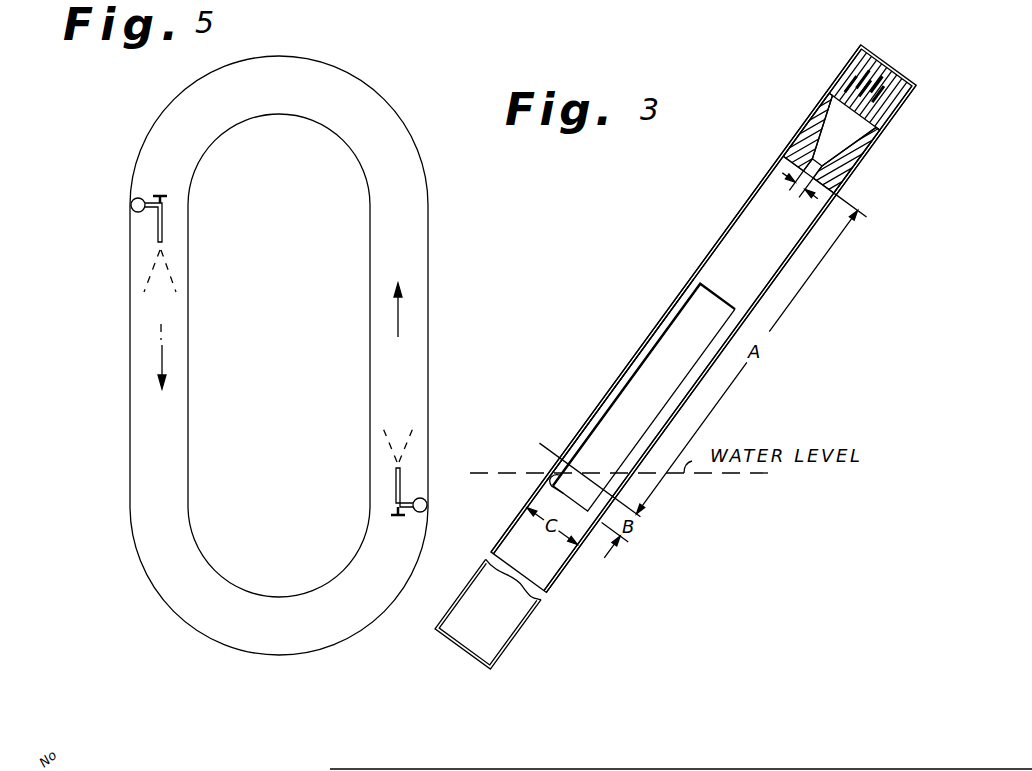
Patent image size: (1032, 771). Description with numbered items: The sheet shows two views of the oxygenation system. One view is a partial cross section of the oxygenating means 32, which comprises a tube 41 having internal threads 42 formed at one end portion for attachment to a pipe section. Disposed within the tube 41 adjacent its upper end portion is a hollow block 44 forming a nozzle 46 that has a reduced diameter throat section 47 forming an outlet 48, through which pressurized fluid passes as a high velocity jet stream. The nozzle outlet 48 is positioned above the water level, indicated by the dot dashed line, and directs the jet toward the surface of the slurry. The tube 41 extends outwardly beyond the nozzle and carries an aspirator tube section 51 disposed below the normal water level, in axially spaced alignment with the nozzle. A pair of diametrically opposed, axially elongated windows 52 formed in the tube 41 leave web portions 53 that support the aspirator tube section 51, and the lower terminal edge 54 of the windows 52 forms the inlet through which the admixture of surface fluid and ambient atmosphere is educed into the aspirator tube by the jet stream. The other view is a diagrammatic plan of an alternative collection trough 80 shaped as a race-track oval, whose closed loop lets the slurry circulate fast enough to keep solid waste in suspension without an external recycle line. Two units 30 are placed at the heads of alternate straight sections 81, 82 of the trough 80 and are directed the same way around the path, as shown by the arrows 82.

In FIG. 5, the unit 30 is at (134, 196).
In FIG. 5, the collection trough 80 is at (355, 90).
In FIG. 5, the straight section 81 is at (368, 300).
In FIG. 5, the arrows 82 is at (399, 313).
In FIG. 3, the oxygenating means 32 is at (658, 289).
In FIG. 3, the tube 41 is at (742, 207).
In FIG. 3, the internal threads 42 is at (898, 92).
In FIG. 3, the hollow block 44 is at (810, 140).
In FIG. 3, the nozzle 46 is at (843, 138).
In FIG. 3, the throat section 47 is at (815, 167).
In FIG. 3, the outlet 48 is at (826, 180).
In FIG. 3, the aspirator tube section 51 is at (507, 630).
In FIG. 3, the windows 52 is at (680, 335).
In FIG. 3, the web portions 53 is at (643, 354).
In FIG. 3, the lower terminal edge 54 is at (553, 478).